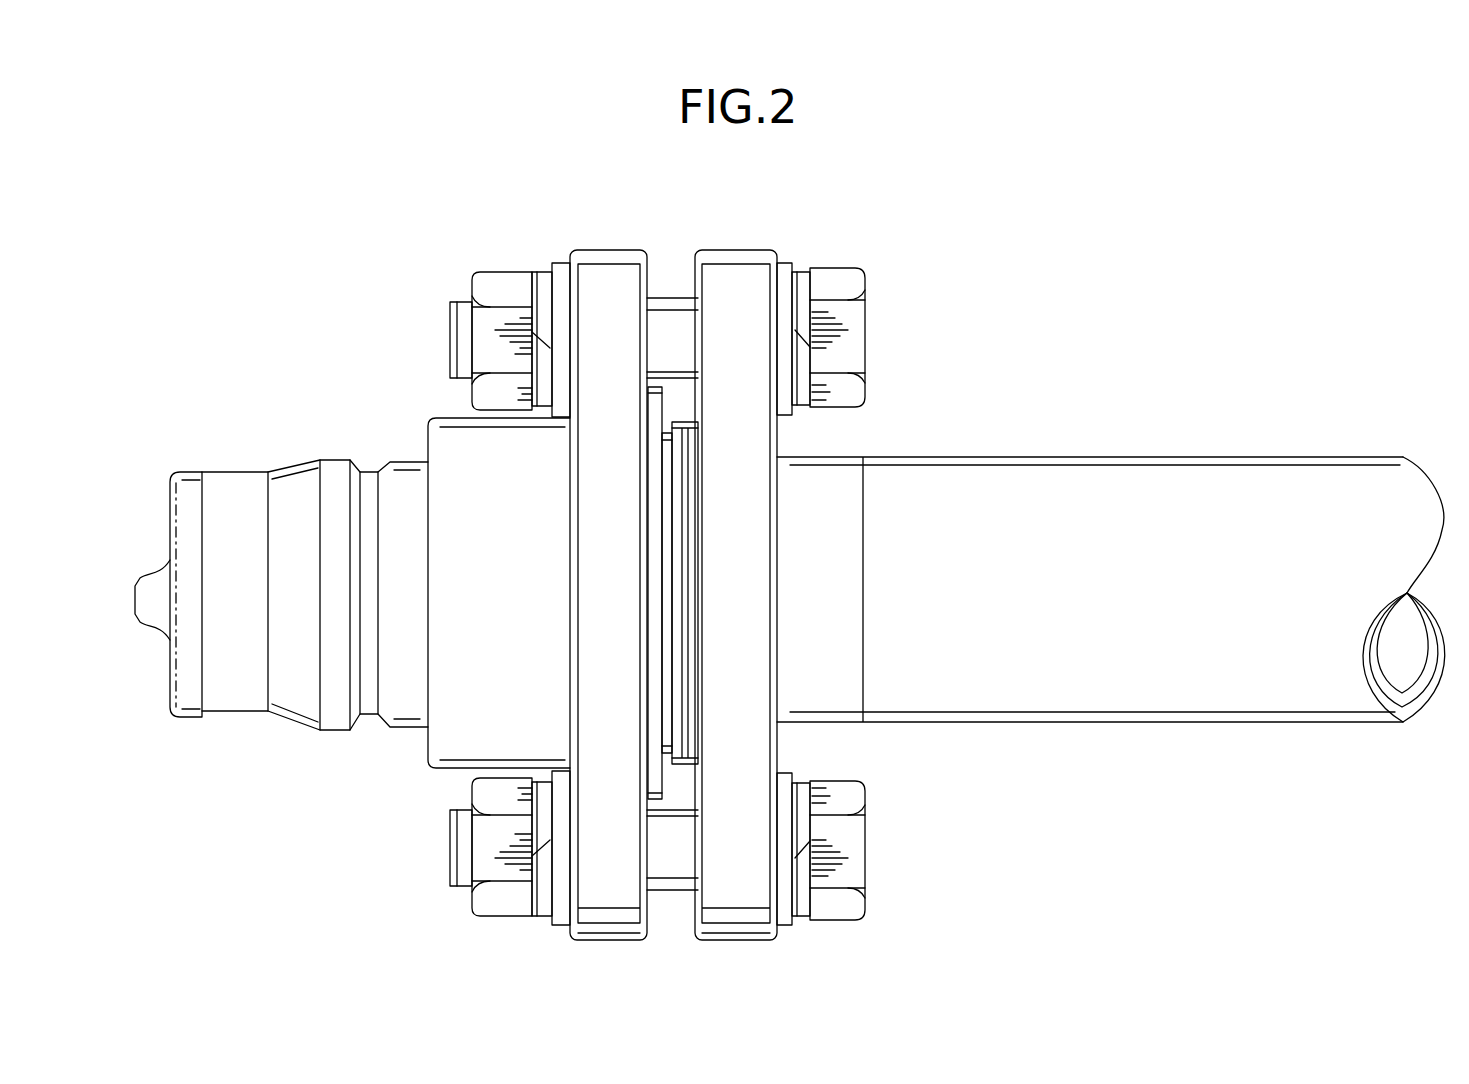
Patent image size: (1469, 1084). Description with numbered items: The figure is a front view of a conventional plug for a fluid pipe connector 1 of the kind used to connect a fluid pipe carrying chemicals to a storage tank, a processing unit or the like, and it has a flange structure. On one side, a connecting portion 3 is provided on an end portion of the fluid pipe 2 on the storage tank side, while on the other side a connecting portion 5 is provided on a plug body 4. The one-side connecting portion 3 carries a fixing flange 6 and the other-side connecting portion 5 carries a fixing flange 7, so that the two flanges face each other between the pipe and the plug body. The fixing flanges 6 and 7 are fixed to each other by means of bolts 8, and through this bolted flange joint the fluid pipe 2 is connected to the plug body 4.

The fluid pipe connector 1 is at (798, 177).
The fluid pipe 2 is at (1183, 495).
The connecting portion 3 is at (823, 244).
The plug body 4 is at (291, 452).
The connecting portion 5 is at (521, 245).
The fixing flange 6 is at (720, 267).
The fixing flange 7 is at (597, 267).
The bolts 8 is at (840, 323).